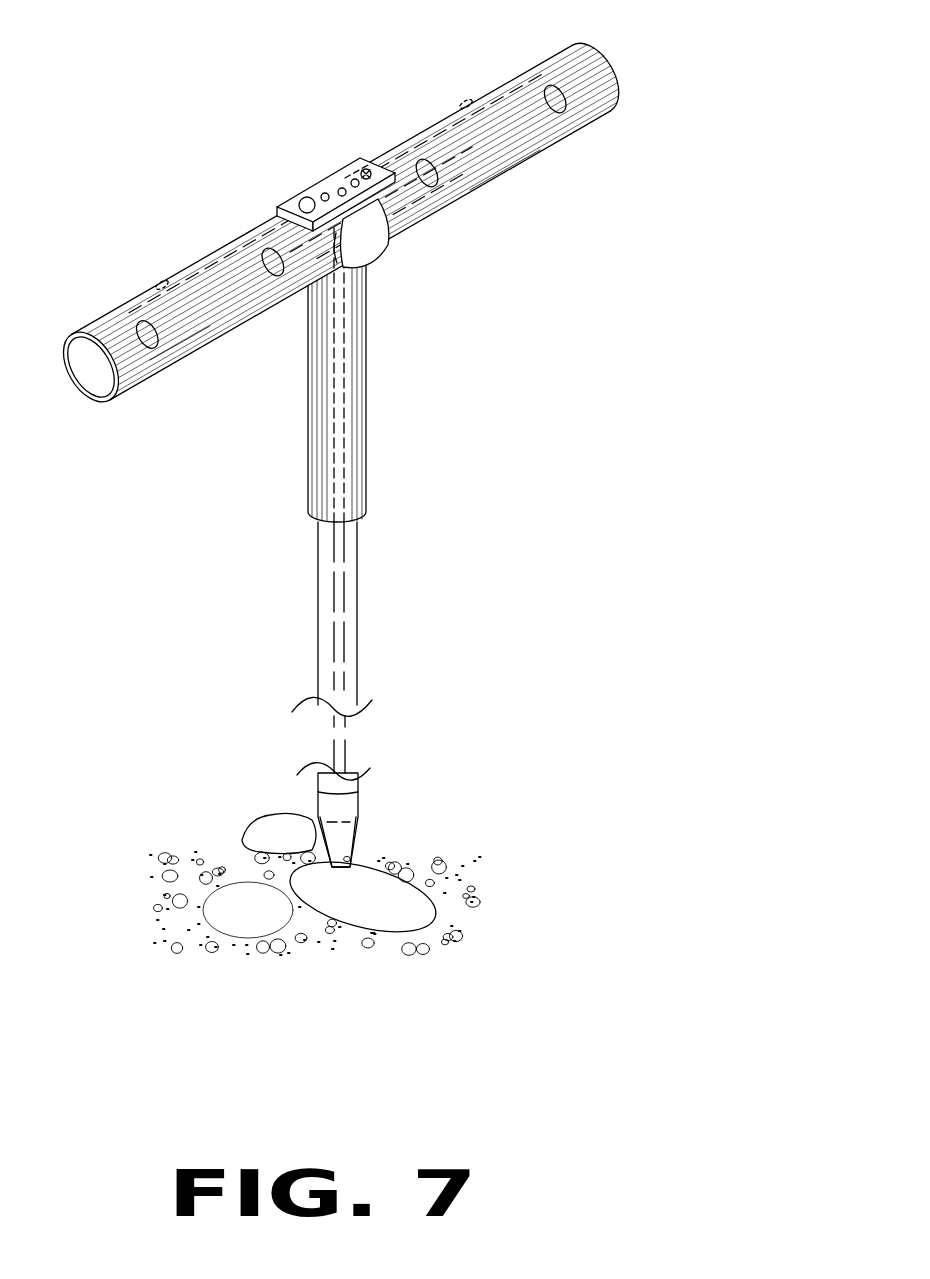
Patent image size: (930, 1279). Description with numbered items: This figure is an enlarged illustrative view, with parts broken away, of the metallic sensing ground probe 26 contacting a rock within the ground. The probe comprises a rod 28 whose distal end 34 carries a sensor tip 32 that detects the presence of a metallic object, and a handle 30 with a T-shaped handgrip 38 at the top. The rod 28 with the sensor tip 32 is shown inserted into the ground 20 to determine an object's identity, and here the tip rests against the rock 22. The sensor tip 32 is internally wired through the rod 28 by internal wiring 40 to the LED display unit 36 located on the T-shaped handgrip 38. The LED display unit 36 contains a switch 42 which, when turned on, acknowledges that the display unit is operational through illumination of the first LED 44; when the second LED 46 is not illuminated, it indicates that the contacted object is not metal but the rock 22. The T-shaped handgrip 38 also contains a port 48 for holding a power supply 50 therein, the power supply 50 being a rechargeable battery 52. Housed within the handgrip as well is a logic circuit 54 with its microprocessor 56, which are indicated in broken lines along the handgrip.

The ground 20 is at (217, 862).
The rock in ground 22 is at (383, 898).
The metallic sensing ground probe 26 is at (358, 613).
The rod of probe 28 is at (323, 580).
The handle of probe 30 is at (523, 88).
The sensor tip 32 is at (347, 832).
The distal end of rod 34 is at (353, 785).
The LED display unit 36 is at (342, 172).
The T-shaped handgrip 38 is at (348, 387).
The internal wiring 40 is at (335, 755).
The switch 42 is at (280, 210).
The first LED 44 is at (322, 200).
The second LED 46 is at (367, 173).
The port 48 is at (97, 360).
The power supply 50 is at (214, 332).
The rechargeable battery 52 is at (160, 283).
The logic circuit 54 is at (500, 153).
The microprocessor 56 is at (463, 102).